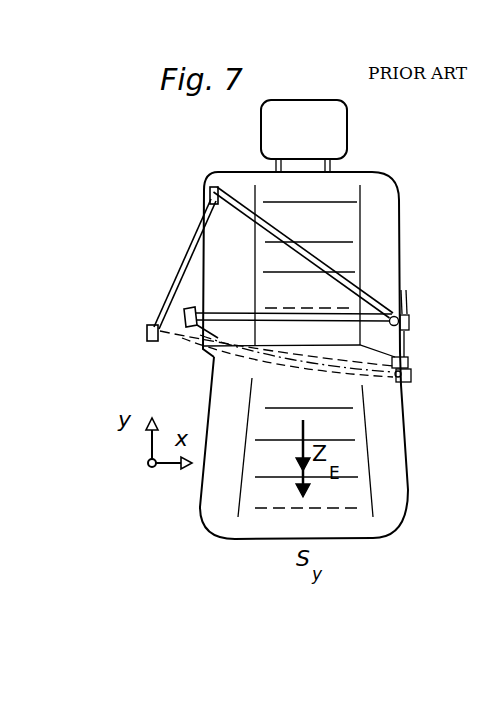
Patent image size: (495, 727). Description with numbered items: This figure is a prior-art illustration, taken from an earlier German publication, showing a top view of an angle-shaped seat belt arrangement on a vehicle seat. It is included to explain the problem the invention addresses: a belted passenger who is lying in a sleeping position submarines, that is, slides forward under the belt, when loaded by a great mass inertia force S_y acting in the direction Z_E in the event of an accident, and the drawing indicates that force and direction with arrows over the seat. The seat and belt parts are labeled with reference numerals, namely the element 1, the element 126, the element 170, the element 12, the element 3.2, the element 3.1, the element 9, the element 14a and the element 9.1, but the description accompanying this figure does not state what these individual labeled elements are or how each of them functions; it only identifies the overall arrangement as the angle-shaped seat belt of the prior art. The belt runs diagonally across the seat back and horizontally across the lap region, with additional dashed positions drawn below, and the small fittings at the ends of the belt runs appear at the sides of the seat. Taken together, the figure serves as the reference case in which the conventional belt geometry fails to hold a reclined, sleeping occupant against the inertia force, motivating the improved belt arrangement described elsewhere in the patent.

The seat belt 1 is at (198, 232).
The upper belt deflection fitting 126 is at (211, 190).
The belt tongue / buckle 170 is at (185, 305).
The lower belt anchor 12 is at (148, 325).
The seat backrest 3.2 is at (380, 201).
The seat cushion 3.1 is at (383, 447).
The buckle strap 9 is at (406, 300).
The belt buckle 14a is at (408, 322).
The buckle strap anchor 9.1 is at (412, 372).